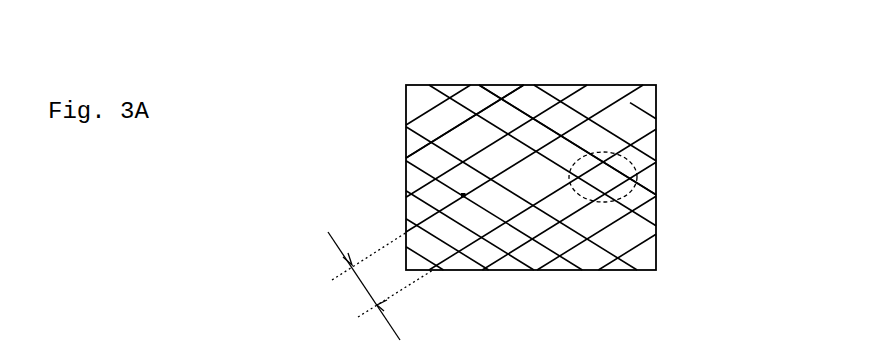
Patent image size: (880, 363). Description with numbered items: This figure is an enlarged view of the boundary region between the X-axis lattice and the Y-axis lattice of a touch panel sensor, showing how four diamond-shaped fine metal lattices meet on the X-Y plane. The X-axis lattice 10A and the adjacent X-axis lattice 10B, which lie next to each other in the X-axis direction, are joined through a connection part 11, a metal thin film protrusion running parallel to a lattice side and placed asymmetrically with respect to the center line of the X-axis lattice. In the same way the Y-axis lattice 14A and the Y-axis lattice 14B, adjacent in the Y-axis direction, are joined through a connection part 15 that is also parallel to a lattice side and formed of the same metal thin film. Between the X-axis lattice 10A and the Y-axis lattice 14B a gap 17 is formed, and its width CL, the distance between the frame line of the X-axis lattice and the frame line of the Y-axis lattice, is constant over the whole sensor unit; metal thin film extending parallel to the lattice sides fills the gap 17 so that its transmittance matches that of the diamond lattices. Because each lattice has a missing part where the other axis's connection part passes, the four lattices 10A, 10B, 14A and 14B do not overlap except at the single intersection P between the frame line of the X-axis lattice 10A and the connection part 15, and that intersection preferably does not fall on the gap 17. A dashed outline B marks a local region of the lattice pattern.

The X-axis lattice 10A is at (445, 211).
The X-axis lattice 10B is at (638, 220).
The connection part 11 is at (515, 162).
The Y-axis lattice 14A is at (583, 123).
The Y-axis lattice 14B is at (572, 226).
The connection part 15 is at (478, 142).
The gap 17 is at (652, 104).
The intersection P is at (461, 195).
The region B is at (643, 173).
The width of the gap CL is at (362, 286).